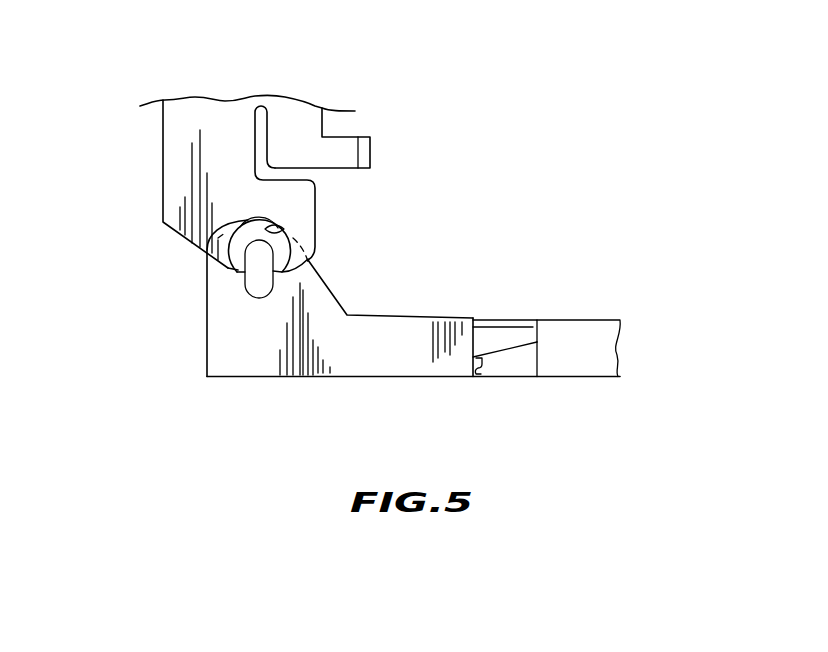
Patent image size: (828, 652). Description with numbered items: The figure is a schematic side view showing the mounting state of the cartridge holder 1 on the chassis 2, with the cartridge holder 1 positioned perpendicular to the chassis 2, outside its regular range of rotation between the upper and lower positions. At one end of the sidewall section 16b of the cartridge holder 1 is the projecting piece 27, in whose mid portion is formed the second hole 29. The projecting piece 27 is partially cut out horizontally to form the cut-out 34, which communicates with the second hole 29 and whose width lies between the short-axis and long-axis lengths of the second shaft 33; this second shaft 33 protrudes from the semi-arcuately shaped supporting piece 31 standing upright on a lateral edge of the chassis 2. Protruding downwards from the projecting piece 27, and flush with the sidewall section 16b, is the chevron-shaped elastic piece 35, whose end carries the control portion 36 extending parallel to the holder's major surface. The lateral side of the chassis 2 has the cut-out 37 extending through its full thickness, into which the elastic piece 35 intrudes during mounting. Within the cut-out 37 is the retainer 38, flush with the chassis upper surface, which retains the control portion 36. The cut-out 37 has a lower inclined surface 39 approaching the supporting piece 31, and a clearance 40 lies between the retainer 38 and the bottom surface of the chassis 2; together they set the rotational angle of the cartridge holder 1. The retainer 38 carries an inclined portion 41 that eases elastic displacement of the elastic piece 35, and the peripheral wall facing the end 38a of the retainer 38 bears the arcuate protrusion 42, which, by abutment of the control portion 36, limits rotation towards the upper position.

The cartridge holder 1 is at (153, 157).
The chassis 2 is at (197, 357).
The sidewall section 16b is at (200, 117).
The projecting piece 27 is at (300, 205).
The second hole 29 is at (285, 230).
The supporting piece 31 is at (313, 298).
The second shaft 33 is at (257, 287).
The cut-out 34 is at (238, 270).
The elastic piece 35 is at (330, 143).
The control portion 36 is at (368, 152).
The cut-out 37 is at (480, 317).
The retainer 38 is at (497, 338).
The end of the retainer 38a is at (597, 322).
The inclined surface 39 is at (485, 357).
The clearance 40 is at (483, 370).
The inclined portion 41 is at (533, 322).
The protrusion 42 is at (537, 336).